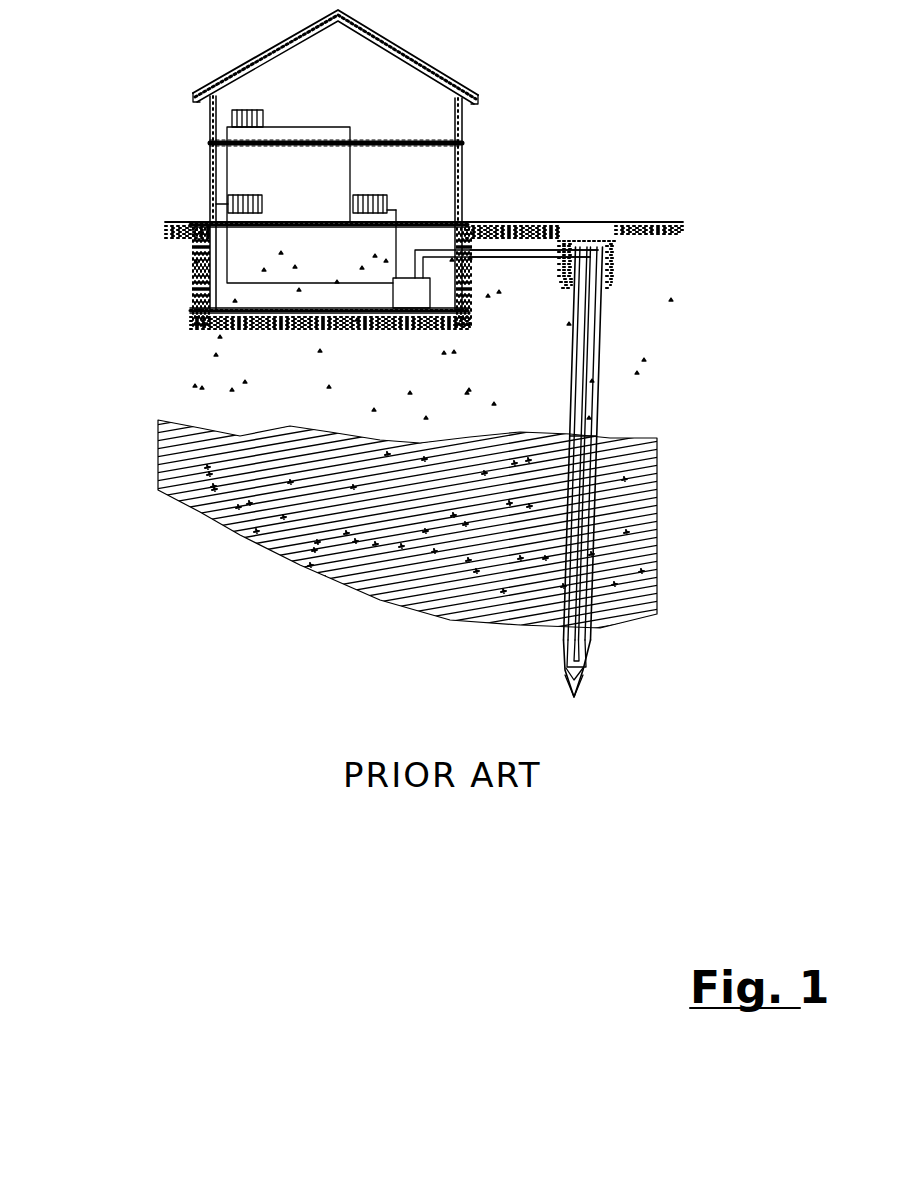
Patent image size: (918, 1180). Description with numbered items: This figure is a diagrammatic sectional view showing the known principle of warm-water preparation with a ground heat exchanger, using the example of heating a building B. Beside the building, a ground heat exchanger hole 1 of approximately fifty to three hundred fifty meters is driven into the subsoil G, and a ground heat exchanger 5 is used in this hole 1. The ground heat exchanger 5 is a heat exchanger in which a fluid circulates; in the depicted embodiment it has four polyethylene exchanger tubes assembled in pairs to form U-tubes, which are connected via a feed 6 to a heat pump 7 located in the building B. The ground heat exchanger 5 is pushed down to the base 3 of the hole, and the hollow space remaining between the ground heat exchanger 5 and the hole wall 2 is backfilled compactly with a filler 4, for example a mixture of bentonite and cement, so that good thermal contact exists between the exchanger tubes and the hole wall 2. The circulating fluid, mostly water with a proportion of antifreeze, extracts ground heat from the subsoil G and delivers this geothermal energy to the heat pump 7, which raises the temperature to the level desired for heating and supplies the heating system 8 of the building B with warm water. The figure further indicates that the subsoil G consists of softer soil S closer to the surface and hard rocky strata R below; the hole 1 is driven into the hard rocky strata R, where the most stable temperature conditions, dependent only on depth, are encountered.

The building B is at (210, 120).
The heating system 8 is at (227, 243).
The heat pump 7 is at (400, 298).
The feed 6 is at (510, 246).
The ground heat exchanger hole 1 is at (590, 240).
The subsoil G is at (680, 222).
The hole wall 2 is at (603, 343).
The ground heat exchanger 5 is at (596, 436).
The filler 4 is at (600, 578).
The base of the hole 3 is at (580, 683).
The softer soil S is at (177, 390).
The hard rocky strata R is at (260, 530).